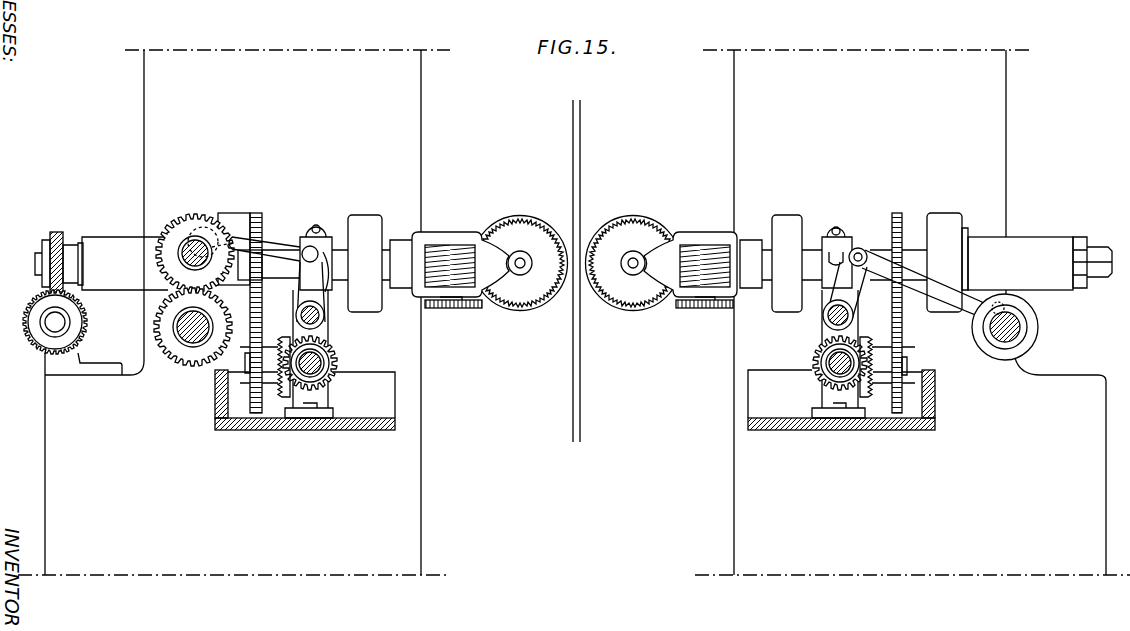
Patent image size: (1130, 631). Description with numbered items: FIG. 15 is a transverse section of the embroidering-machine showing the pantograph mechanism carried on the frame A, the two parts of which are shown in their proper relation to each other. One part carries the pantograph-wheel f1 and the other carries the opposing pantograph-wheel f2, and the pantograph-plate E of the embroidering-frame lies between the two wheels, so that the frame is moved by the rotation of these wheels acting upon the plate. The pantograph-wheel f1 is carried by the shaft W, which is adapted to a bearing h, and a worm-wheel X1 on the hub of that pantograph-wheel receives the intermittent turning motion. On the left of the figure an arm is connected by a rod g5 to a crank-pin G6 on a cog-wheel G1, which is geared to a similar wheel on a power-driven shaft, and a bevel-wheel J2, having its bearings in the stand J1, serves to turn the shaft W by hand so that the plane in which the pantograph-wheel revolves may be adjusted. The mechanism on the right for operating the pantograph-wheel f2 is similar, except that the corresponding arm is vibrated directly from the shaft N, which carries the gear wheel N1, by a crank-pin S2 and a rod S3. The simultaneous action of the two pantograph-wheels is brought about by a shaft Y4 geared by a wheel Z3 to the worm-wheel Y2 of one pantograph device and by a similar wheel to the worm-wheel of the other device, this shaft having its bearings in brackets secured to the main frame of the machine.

The frame A is at (574, 312).
The pantograph-plate E is at (585, 271).
The worm-wheel Y2 is at (62, 228).
The shaft Y4 is at (73, 264).
The wheel Z3 is at (38, 322).
The cog-wheel G1 is at (192, 250).
The crank-pin G6 is at (218, 235).
The rod g5 is at (264, 249).
The shaft W is at (356, 257).
The stand J1 is at (328, 400).
The bevel-wheel J2 is at (338, 360).
The pantograph-wheel f1 is at (520, 249).
The worm-wheel X1 is at (530, 263).
The pantograph-wheel f2 is at (633, 249).
The bearing h is at (787, 216).
The rod S3 is at (923, 283).
The gear wheel N1 is at (832, 363).
The shaft N is at (1023, 325).
The crank-pin S2 is at (1005, 305).